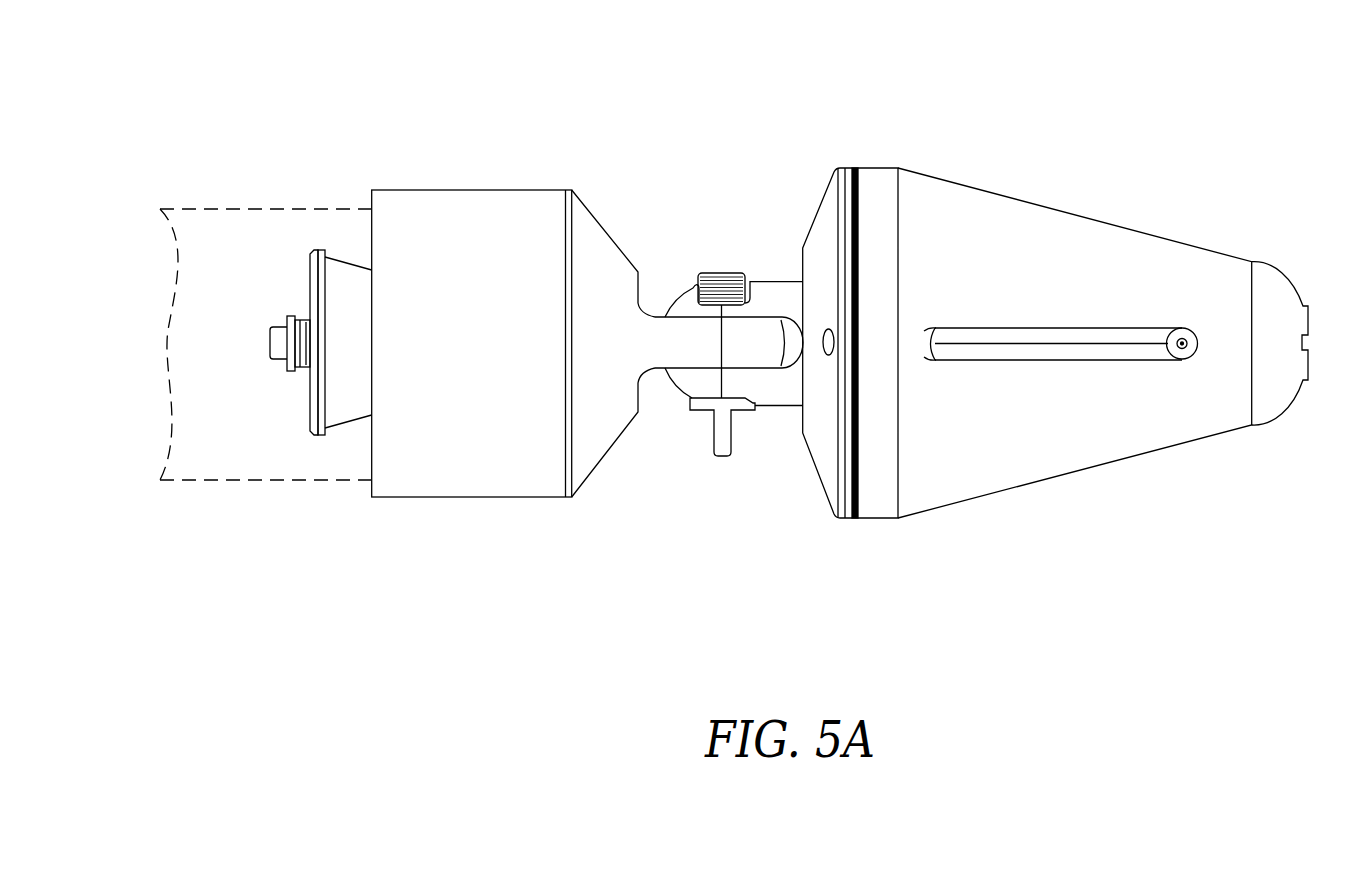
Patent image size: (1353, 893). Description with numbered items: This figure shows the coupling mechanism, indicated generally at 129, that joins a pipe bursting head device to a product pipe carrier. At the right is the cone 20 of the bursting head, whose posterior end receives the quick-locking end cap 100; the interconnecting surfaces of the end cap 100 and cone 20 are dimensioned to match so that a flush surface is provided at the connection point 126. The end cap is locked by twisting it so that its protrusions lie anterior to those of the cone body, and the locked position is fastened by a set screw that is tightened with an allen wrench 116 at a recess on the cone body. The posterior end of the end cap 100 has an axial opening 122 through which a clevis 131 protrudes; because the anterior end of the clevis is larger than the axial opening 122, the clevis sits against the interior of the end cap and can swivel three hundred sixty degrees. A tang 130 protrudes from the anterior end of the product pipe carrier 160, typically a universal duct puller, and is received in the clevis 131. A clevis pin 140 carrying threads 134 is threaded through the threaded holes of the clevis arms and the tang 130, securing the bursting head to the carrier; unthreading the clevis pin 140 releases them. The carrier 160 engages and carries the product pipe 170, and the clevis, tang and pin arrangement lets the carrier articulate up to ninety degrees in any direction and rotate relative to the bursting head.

The cone 20 is at (972, 215).
The quick-locking end cap 100 is at (823, 250).
The allen wrench 116 is at (830, 362).
The axial opening 122 is at (800, 410).
The connection point 126 is at (858, 523).
The clamp assembly 129 is at (632, 563).
The tang 130 is at (650, 337).
The clevis 131 is at (763, 298).
The threads 134 is at (722, 290).
The clevis pin 140 is at (712, 440).
The product pipe carrier 160 is at (483, 243).
The product pipe 170 is at (268, 480).